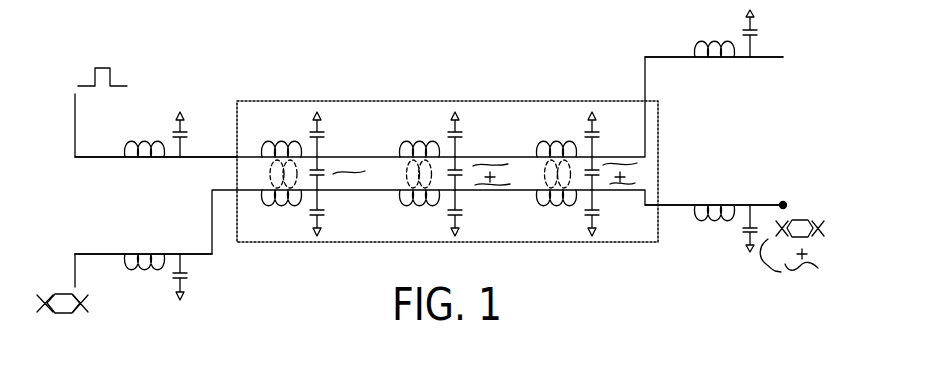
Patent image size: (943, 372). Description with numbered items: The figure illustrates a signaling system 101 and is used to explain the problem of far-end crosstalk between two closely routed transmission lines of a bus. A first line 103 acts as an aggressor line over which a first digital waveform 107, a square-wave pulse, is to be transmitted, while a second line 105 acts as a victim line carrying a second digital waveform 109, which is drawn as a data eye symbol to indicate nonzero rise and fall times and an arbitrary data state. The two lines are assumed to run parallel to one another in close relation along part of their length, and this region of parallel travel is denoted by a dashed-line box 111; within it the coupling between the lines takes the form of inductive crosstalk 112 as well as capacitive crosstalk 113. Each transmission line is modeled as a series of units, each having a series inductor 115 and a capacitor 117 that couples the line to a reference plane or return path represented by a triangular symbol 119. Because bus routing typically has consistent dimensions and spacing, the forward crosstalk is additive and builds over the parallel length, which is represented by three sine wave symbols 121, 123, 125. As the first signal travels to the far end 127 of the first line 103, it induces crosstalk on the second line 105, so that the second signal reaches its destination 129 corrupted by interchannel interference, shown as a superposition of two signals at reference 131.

The signaling system 101 is at (215, 50).
The first line 103 is at (92, 157).
The second line 105 is at (75, 254).
The first digital waveform 107 is at (112, 67).
The second digital waveform 109 is at (70, 312).
The dashed-line box 111 is at (382, 101).
The inductive crosstalk 112 is at (272, 176).
The capacitive crosstalk 113 is at (318, 176).
The inductor 115 is at (268, 143).
The capacitor 117 is at (310, 133).
The triangular symbol 119 is at (320, 112).
The sine wave symbol 121 is at (337, 172).
The sine wave symbol 123 is at (496, 186).
The sine wave symbol 125 is at (623, 188).
The far end 127 is at (772, 56).
The destination 129 is at (782, 203).
The interchannel interference 131 is at (763, 263).